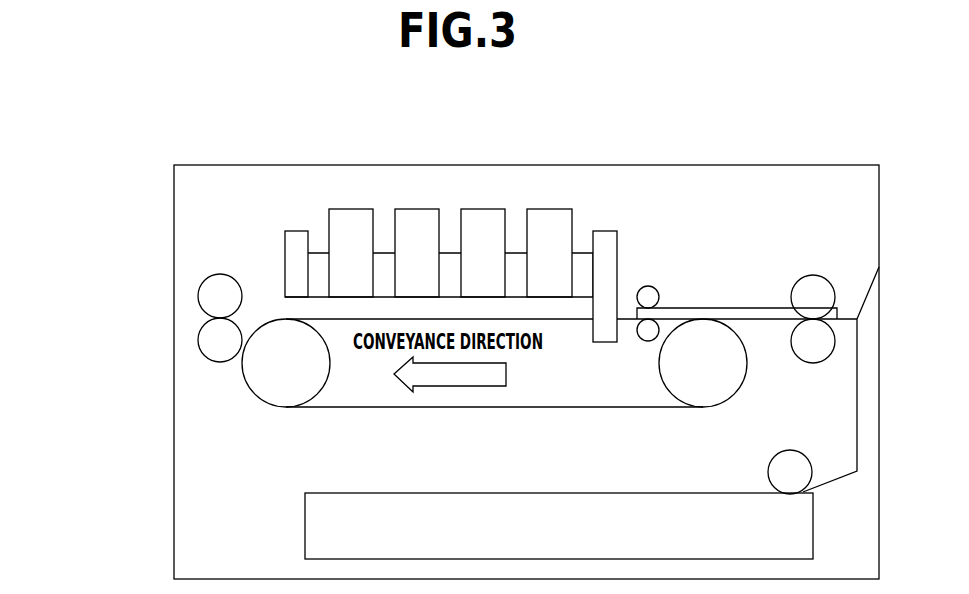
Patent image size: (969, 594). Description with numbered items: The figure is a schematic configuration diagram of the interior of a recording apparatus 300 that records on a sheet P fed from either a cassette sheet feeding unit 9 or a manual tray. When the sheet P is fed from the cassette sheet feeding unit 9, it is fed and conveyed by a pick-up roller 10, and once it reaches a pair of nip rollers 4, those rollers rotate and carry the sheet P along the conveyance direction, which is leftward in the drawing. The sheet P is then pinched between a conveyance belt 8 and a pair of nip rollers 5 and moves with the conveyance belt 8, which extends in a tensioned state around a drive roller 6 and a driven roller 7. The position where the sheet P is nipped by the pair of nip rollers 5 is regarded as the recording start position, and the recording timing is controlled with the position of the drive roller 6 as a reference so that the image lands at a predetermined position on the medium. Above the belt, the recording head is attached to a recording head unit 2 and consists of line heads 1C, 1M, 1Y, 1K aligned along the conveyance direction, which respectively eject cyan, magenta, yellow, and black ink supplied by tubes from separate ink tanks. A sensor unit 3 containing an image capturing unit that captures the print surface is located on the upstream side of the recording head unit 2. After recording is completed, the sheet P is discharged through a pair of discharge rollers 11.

The recording apparatus 300 is at (140, 245).
The cyan line head 1C is at (355, 209).
The magenta line head 1M is at (421, 209).
The yellow line head 1Y is at (484, 209).
The black line head 1K is at (551, 209).
The recording head unit 2 is at (581, 253).
The sensor unit 3 is at (604, 231).
The pair of nip rollers 4 is at (813, 275).
The pair of nip rollers 5 is at (648, 286).
The drive roller 6 is at (268, 405).
The driven roller 7 is at (748, 383).
The conveyance belt 8 is at (527, 407).
The cassette sheet feeding unit 9 is at (305, 524).
The pick-up roller 10 is at (768, 472).
The pair of discharge rollers 11 is at (219, 362).
The sheet P is at (722, 308).